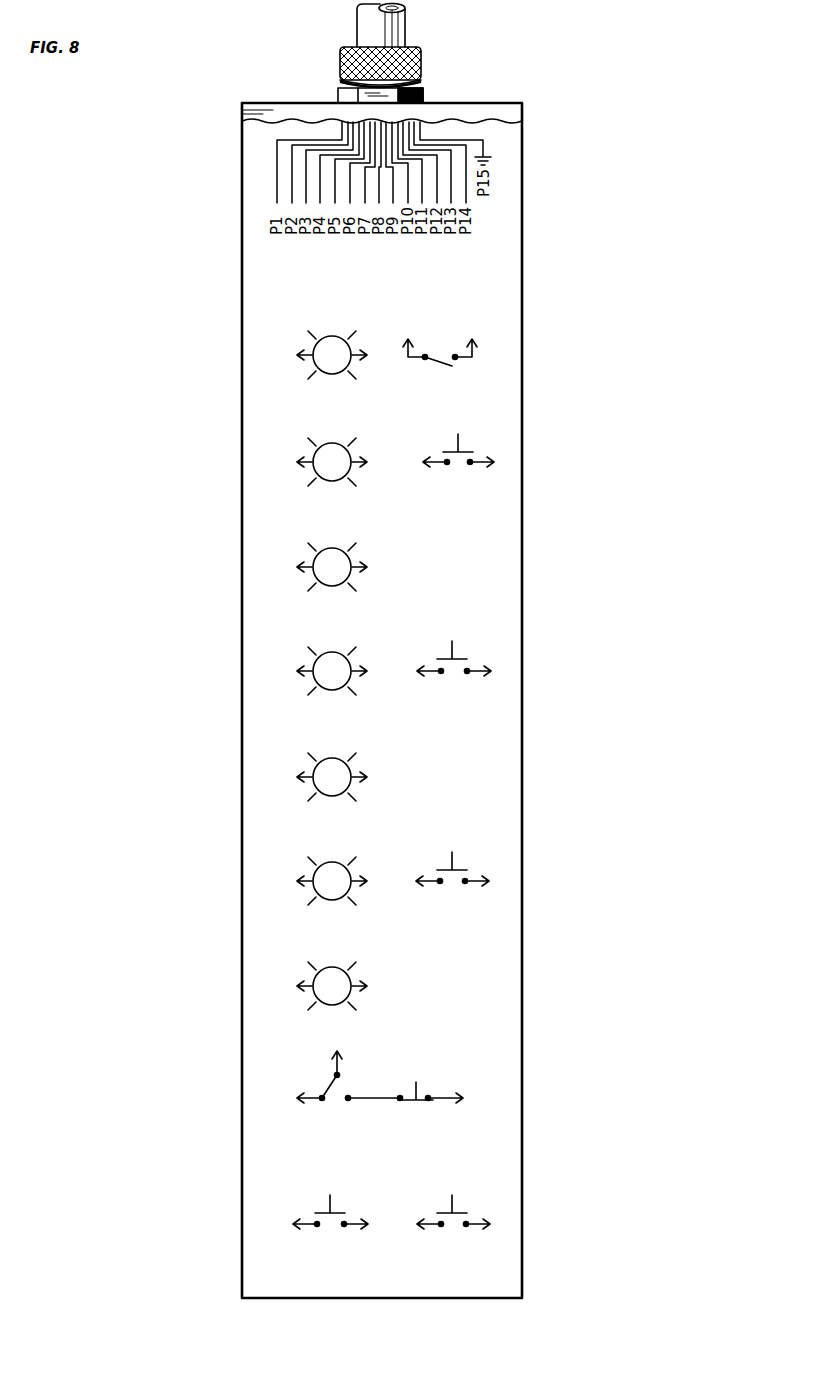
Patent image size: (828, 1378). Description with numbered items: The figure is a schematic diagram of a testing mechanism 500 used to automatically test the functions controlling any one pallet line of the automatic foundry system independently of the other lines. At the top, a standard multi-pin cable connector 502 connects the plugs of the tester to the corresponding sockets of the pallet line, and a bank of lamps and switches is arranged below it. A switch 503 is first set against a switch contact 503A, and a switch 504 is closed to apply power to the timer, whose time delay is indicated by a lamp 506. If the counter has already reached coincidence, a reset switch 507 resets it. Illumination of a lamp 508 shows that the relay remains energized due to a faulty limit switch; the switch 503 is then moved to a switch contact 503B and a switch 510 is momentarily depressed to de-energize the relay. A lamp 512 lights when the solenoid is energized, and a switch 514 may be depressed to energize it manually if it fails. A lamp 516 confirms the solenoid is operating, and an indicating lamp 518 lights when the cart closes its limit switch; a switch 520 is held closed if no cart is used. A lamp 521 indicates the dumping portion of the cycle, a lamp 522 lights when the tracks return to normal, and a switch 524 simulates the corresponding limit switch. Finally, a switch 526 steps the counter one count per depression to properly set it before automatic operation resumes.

The testing mechanism 500 is at (540, 288).
The multi-pin cable connector 502 is at (423, 77).
The switch 503 is at (337, 1084).
The switch contact 503A is at (322, 1101).
The switch contact 503B is at (348, 1095).
The switch 504 is at (447, 364).
The lamp 506 is at (332, 340).
The reset switch 507 is at (330, 1196).
The lamp 508 is at (333, 980).
The switch 510 is at (416, 1082).
The lamp 512 is at (331, 453).
The switch 514 is at (458, 436).
The lamp 516 is at (334, 560).
The indicating lamp 518 is at (334, 664).
The switch 520 is at (452, 642).
The lamp 521 is at (344, 760).
The lamp 522 is at (333, 875).
The switch 524 is at (452, 855).
The switch 526 is at (468, 1177).